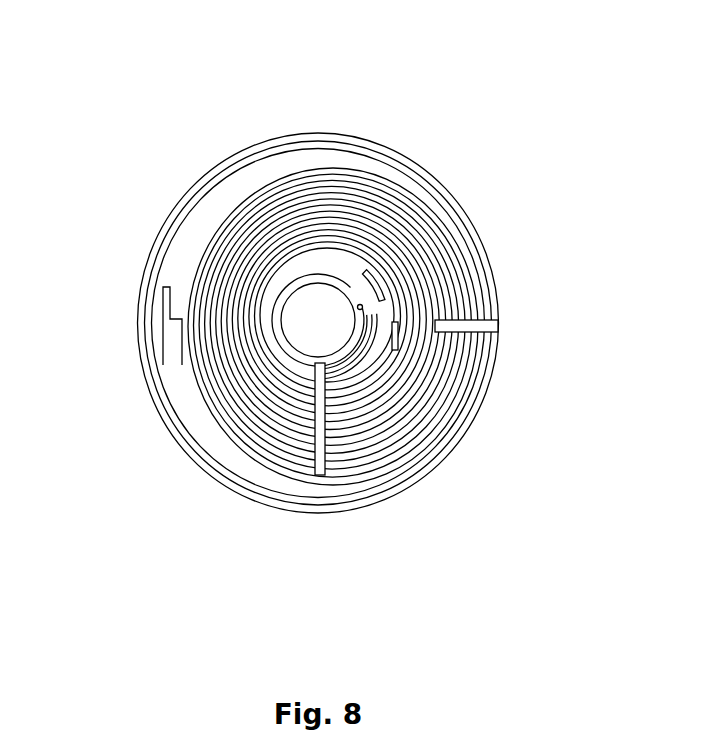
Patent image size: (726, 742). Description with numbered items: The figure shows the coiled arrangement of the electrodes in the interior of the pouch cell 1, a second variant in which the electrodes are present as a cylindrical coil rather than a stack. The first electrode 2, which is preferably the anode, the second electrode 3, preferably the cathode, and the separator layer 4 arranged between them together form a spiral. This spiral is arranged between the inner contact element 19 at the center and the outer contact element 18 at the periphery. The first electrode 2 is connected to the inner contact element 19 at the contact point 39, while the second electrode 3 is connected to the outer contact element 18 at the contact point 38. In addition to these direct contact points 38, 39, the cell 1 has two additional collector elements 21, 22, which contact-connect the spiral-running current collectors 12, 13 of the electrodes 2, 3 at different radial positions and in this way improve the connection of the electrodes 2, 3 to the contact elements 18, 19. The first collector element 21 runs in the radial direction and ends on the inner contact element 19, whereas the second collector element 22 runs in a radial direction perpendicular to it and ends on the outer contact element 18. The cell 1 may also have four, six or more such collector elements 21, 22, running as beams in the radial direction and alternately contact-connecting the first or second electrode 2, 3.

The cell 1 is at (549, 164).
The first electrode 2 is at (337, 472).
The second electrode 3 is at (264, 483).
The separator layer 4 is at (323, 476).
The current collector 12 is at (365, 453).
The current collector 13 is at (230, 487).
The outer contact element 18 is at (133, 320).
The inner contact element 19 is at (352, 318).
The first collector element 21 is at (338, 420).
The second collector element 22 is at (468, 333).
The contact point 38 is at (163, 323).
The contact point 39 is at (363, 303).